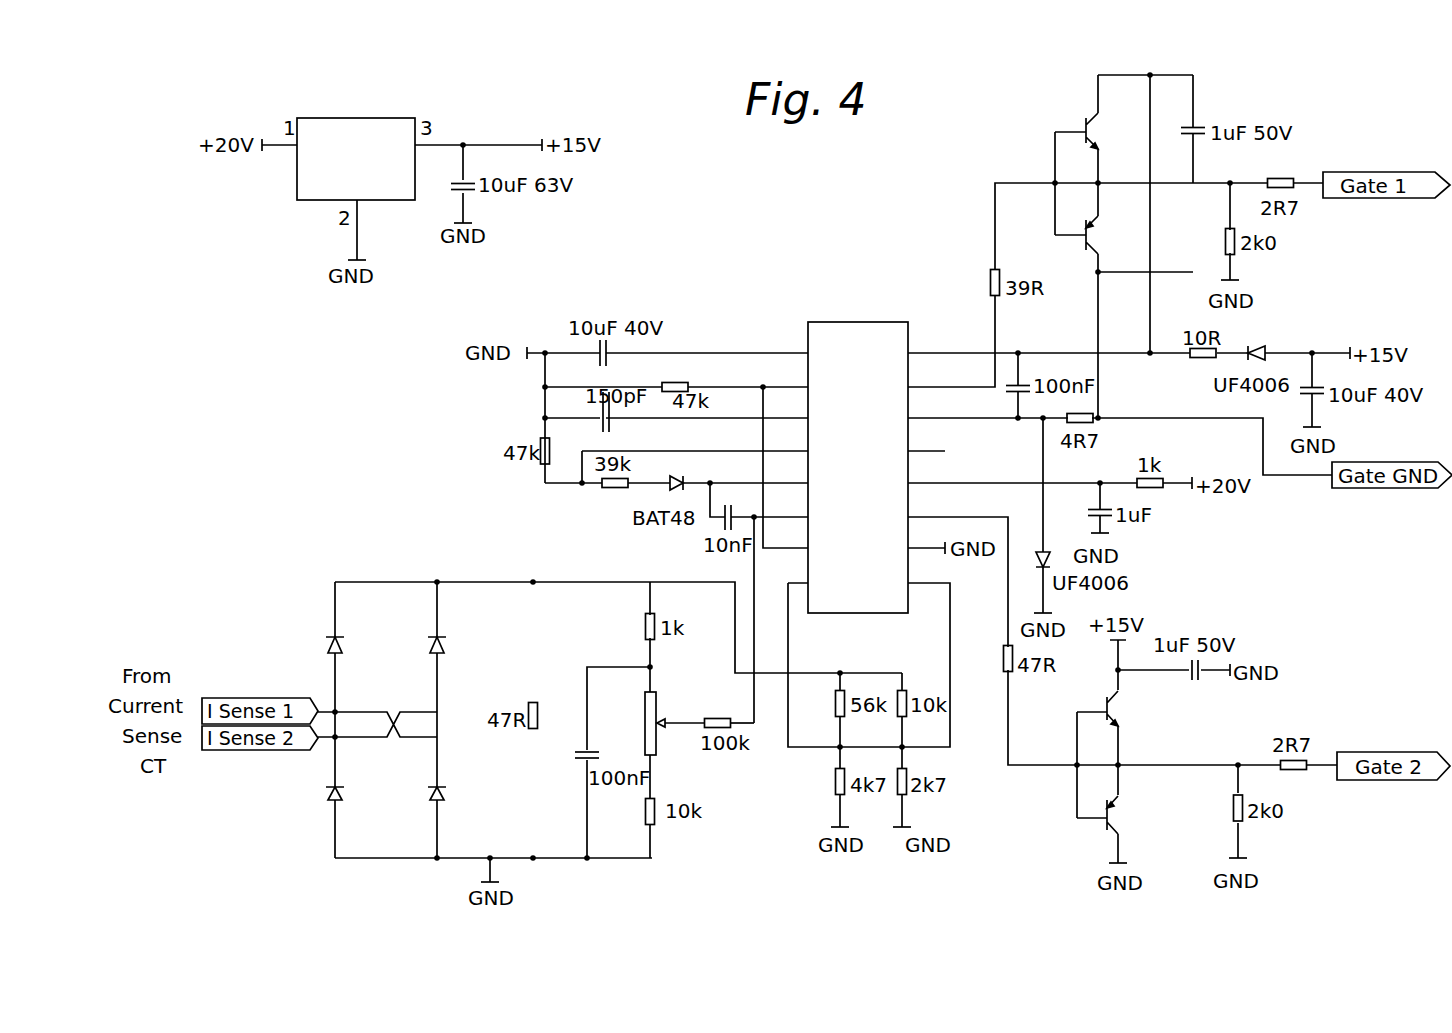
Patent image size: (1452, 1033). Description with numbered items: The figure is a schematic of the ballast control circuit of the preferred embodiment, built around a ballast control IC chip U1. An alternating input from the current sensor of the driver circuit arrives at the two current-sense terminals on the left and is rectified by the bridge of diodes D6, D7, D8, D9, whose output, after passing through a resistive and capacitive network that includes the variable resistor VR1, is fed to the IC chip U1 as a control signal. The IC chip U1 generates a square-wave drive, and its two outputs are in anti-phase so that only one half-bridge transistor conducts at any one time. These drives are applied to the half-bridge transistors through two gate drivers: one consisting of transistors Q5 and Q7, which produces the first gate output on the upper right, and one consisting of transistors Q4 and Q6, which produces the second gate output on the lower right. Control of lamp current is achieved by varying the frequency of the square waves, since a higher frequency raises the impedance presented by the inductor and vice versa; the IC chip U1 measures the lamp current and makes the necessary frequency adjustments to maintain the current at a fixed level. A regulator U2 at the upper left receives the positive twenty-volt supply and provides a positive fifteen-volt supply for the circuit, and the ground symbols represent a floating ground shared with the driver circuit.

The ballast control IC chip U1 is at (862, 453).
The 7815 voltage regulator U2 is at (356, 130).
The transistor Q4 is at (1153, 714).
The transistor Q5 is at (1132, 135).
The transistor Q6 is at (1153, 819).
The transistor Q7 is at (1132, 235).
The diode D6 is at (371, 641).
The diode D7 is at (373, 790).
The diode D8 is at (473, 641).
The diode D9 is at (475, 790).
The 5k variable resistor VR1 is at (664, 722).